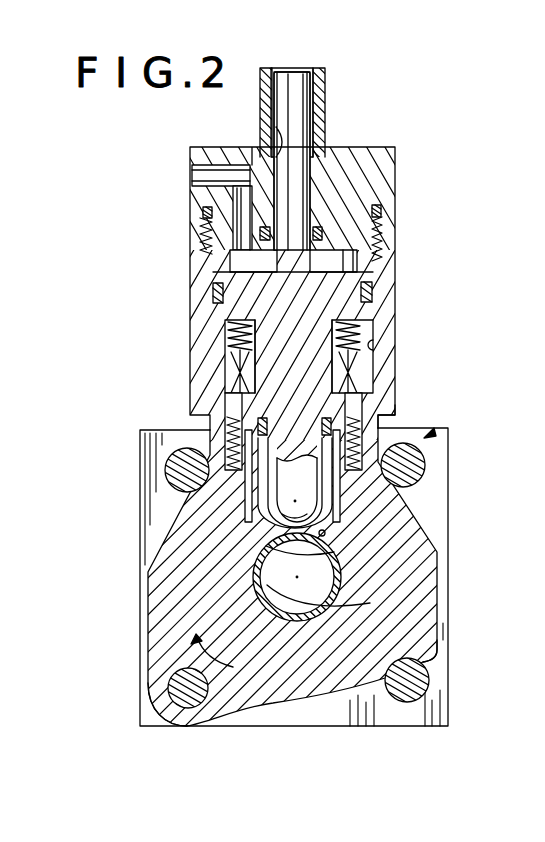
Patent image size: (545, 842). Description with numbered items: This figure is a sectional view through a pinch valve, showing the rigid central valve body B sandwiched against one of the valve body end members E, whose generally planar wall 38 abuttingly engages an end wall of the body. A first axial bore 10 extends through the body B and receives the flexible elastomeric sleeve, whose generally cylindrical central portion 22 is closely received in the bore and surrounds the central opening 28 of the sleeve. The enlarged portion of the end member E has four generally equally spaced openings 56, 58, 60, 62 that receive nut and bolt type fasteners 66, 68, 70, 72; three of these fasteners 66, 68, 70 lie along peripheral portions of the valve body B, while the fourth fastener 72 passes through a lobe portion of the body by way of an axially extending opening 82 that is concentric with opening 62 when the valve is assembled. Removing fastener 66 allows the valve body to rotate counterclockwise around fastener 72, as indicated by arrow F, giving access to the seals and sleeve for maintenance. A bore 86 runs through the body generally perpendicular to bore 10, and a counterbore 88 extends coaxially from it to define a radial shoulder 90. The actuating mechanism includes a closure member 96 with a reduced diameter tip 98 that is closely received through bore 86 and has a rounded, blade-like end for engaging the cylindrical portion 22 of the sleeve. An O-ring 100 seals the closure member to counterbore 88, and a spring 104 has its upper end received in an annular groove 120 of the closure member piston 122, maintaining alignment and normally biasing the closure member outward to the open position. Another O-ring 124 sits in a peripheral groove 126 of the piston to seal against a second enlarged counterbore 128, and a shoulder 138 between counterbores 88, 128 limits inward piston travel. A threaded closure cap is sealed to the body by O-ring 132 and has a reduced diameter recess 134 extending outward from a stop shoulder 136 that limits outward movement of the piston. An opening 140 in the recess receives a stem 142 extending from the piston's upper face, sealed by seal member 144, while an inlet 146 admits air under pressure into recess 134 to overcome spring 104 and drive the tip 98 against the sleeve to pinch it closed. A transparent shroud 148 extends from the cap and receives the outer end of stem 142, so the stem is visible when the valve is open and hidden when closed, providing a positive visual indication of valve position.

The first axial bore 10 is at (343, 598).
The cylindrical central portion 22 is at (256, 583).
The central opening 28 is at (339, 574).
The planar wall 38 is at (428, 505).
The opening 56 is at (172, 472).
The opening 58 is at (423, 470).
The opening 60 is at (425, 662).
The opening 62 is at (188, 688).
The fastener 66 is at (182, 461).
The fastener 68 is at (403, 463).
The fastener 70 is at (410, 686).
The fastener 72 is at (175, 684).
The axially extending opening 82 is at (196, 693).
The bore 86 is at (325, 533).
The counterbore 88 is at (256, 504).
The radial shoulder 90 is at (260, 532).
The closure member 96 is at (305, 402).
The reduced diameter tip 98 is at (310, 495).
The O-ring 100 is at (380, 408).
The spring 104 is at (225, 368).
The annular groove 120 is at (225, 333).
The closure member piston 122 is at (345, 303).
The O-ring 124 is at (213, 294).
The peripheral groove 126 is at (372, 292).
The second enlarged counterbore 128 is at (373, 345).
The O-ring 132 is at (203, 214).
The reduced diameter recess 134 is at (363, 275).
The stop shoulder 136 is at (193, 285).
The shoulder 138 is at (222, 374).
The opening 140 is at (276, 133).
The stem 142 is at (290, 124).
The seal member 144 is at (318, 231).
The inlet 146 is at (197, 177).
The transparent shroud 148 is at (325, 85).
The central valve body B is at (403, 589).
The valve body end member E is at (428, 434).
The arrow F is at (213, 650).